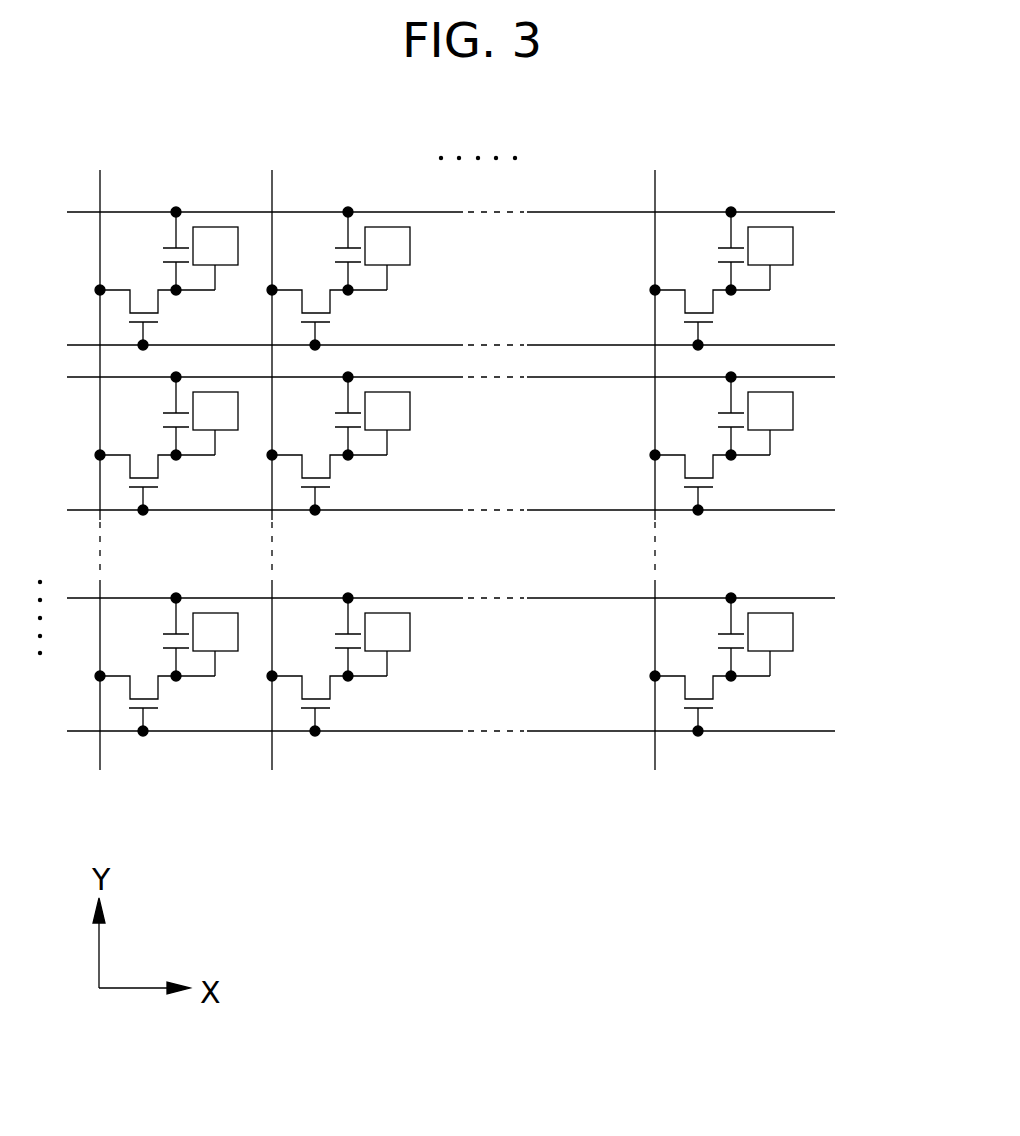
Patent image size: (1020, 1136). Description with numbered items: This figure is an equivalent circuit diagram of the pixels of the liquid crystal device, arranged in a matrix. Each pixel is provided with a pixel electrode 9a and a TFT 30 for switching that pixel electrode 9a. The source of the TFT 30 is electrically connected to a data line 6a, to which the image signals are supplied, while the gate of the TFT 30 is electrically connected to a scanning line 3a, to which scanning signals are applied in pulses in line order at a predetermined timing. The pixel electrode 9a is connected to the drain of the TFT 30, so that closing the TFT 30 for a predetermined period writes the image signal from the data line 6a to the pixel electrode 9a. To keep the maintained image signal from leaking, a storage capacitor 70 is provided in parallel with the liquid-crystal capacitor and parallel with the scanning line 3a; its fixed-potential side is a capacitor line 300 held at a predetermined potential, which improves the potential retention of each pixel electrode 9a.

The data line 6a is at (708, 167).
The scanning line 3a is at (890, 345).
The capacitor line 300 is at (817, 213).
The pixel electrode 9a is at (793, 262).
The storage capacitor 70 is at (157, 261).
The TFT 30 is at (120, 305).